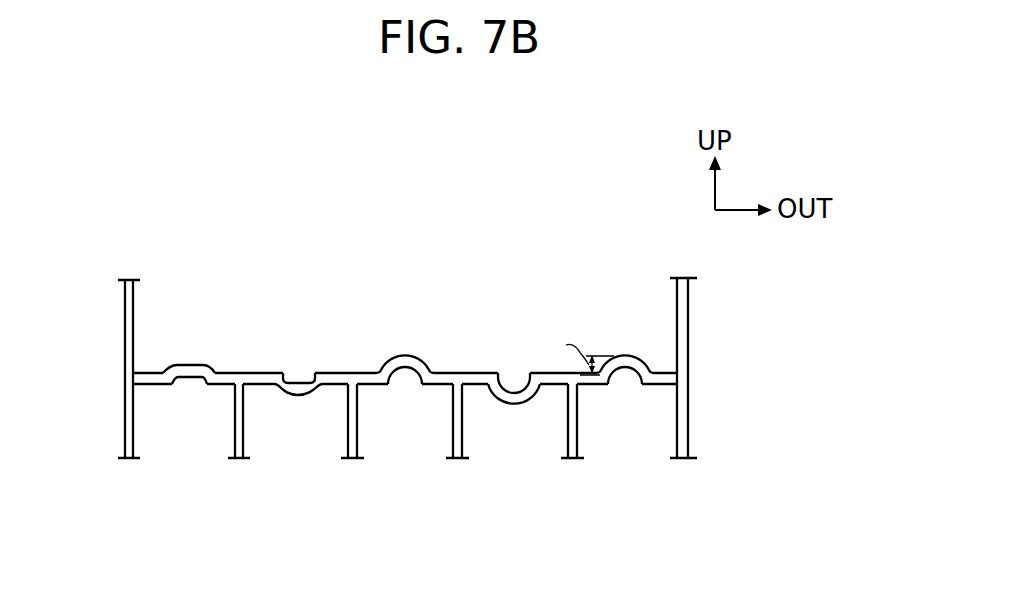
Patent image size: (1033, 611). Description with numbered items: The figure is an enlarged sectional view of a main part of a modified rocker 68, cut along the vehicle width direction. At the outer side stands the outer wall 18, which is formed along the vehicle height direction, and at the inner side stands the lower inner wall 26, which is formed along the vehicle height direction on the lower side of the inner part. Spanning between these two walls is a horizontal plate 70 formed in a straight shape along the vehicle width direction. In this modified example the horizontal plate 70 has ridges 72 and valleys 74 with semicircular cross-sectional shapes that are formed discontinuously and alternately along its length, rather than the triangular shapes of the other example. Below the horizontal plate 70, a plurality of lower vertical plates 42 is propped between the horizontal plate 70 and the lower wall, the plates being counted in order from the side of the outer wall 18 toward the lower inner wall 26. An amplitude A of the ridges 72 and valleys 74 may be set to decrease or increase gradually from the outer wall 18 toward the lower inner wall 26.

The outer wall 18 is at (684, 325).
The lower inner wall 26 is at (125, 331).
The lower vertical plates 42 is at (234, 452).
The rocker 68 is at (728, 284).
The horizontal plate 70 is at (551, 392).
The ridges 72 is at (197, 368).
The valleys 74 is at (292, 397).